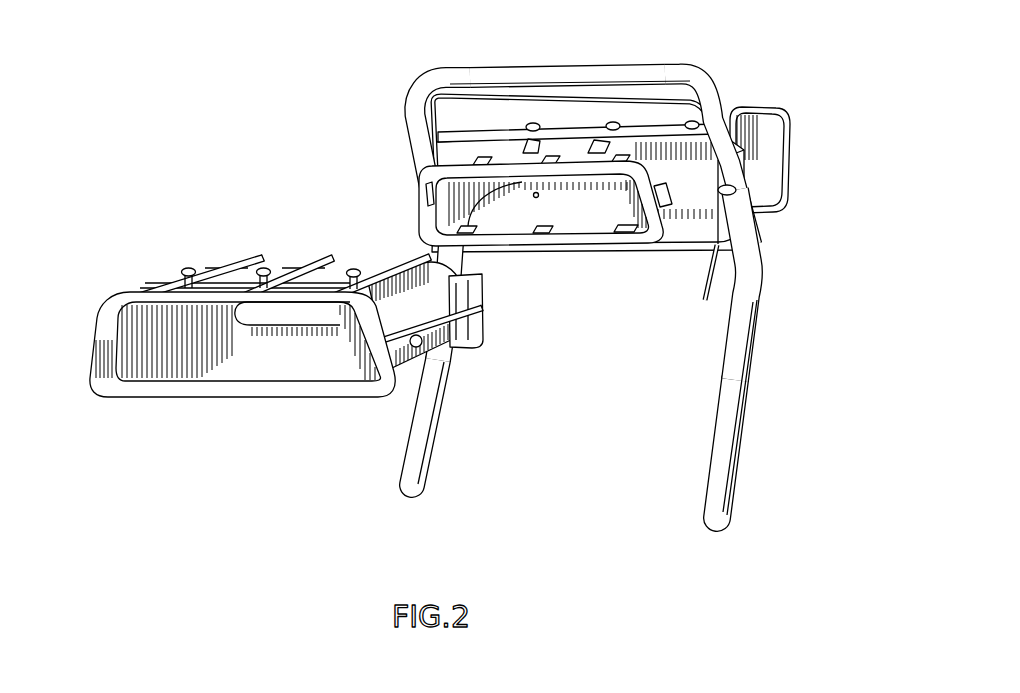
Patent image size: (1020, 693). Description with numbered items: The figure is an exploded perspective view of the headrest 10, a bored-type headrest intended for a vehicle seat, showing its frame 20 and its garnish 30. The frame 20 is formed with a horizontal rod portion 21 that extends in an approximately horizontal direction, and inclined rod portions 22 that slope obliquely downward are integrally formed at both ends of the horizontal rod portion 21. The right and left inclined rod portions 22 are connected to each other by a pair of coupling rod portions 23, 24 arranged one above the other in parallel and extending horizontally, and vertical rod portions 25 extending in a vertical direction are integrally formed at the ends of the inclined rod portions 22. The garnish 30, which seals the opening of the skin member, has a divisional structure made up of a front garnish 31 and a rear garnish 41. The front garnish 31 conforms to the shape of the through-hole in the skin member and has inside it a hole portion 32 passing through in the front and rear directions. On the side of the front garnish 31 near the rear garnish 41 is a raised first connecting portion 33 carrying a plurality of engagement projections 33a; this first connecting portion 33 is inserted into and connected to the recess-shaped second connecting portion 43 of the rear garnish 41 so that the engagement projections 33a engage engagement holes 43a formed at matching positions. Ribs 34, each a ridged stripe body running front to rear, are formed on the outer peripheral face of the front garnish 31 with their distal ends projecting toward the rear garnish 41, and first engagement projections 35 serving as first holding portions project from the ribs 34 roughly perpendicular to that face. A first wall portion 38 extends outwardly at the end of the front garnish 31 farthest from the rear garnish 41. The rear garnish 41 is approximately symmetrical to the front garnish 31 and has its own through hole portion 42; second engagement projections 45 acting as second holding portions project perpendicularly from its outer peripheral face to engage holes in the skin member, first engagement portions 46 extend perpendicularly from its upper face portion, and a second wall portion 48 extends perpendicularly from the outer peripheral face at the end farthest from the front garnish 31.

The headrest 10 is at (278, 38).
The frame 20 is at (587, 264).
The horizontal rod portion 21 is at (552, 64).
The inclined rod portion 22 is at (721, 86).
The coupling rod portion 23 is at (432, 104).
The coupling rod portion 24 is at (717, 250).
The vertical rod portion 25 is at (740, 468).
The garnish 30 is at (598, 300).
The front garnish 31 is at (484, 338).
The hole portion 32 is at (224, 381).
The first connecting portion 33 is at (358, 268).
The engagement projection 33a is at (482, 292).
The rib 34 is at (262, 265).
The first engagement projection 35 is at (185, 268).
The first wall portion 38 is at (100, 312).
The rear garnish 41 is at (592, 247).
The hole portion 42 is at (536, 198).
The second connecting portion 43 is at (423, 207).
The engagement hole 43a is at (662, 211).
The second engagement projection 45 is at (533, 123).
The first engagement portion 46 is at (592, 138).
The second wall portion 48 is at (790, 131).